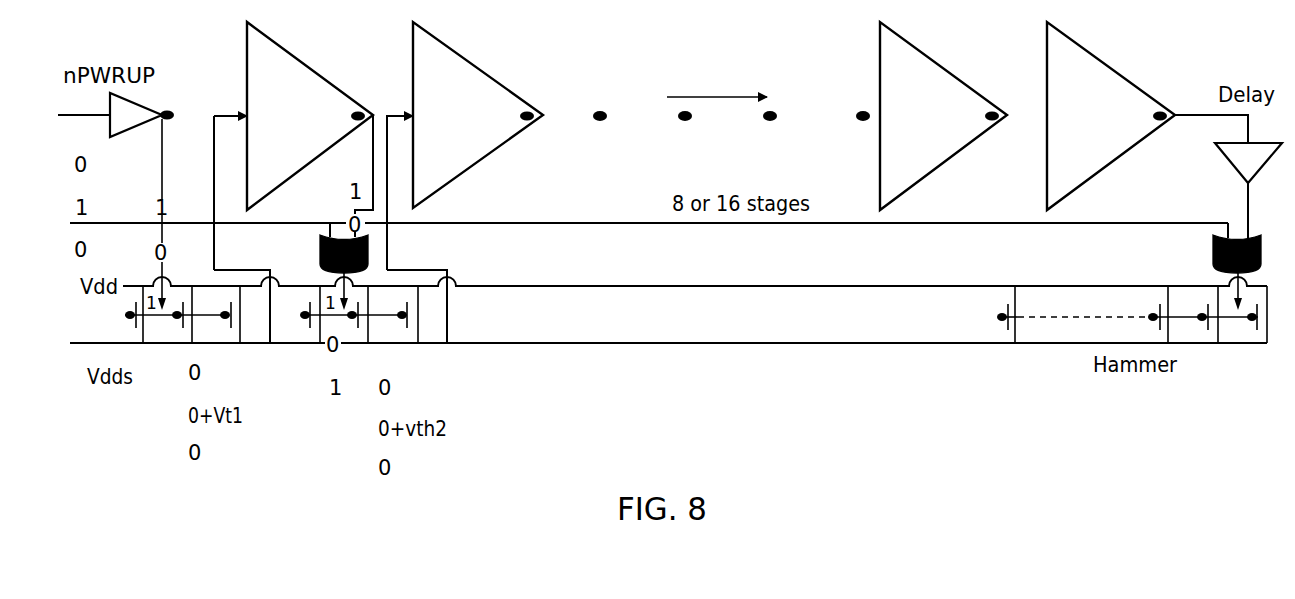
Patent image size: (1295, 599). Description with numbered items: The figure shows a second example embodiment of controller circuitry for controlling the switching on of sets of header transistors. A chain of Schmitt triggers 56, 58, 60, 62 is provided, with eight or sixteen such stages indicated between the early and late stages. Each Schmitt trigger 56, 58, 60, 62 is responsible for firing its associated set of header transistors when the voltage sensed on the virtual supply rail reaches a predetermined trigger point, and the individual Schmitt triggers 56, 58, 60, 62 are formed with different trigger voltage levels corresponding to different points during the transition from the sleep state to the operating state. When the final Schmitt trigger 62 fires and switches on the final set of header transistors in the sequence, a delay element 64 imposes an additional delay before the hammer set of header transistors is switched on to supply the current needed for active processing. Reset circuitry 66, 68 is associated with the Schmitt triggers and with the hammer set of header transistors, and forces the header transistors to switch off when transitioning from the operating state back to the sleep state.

The Schmitt trigger 56 is at (312, 65).
The Schmitt trigger 58 is at (474, 65).
The Schmitt trigger 60 is at (940, 65).
The Schmitt trigger 62 is at (1107, 65).
The delay element 64 is at (1227, 162).
The reset circuitry 66 is at (320, 262).
The reset circuitry 68 is at (1212, 261).